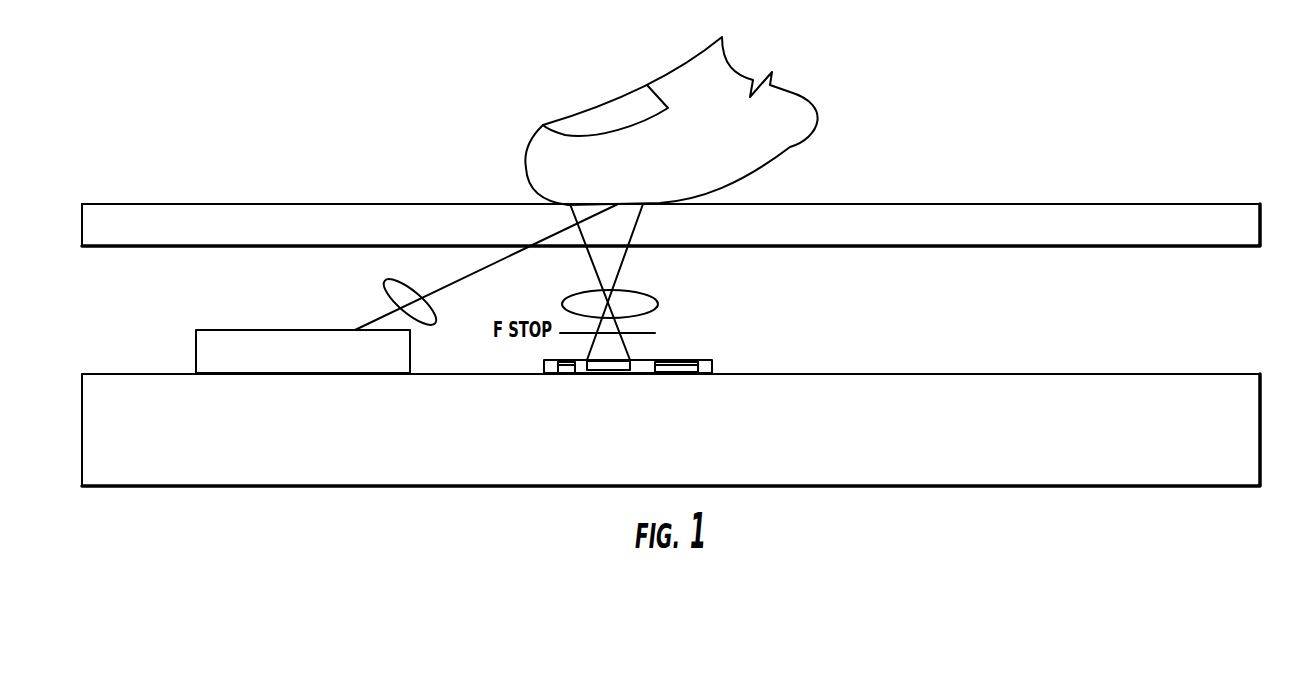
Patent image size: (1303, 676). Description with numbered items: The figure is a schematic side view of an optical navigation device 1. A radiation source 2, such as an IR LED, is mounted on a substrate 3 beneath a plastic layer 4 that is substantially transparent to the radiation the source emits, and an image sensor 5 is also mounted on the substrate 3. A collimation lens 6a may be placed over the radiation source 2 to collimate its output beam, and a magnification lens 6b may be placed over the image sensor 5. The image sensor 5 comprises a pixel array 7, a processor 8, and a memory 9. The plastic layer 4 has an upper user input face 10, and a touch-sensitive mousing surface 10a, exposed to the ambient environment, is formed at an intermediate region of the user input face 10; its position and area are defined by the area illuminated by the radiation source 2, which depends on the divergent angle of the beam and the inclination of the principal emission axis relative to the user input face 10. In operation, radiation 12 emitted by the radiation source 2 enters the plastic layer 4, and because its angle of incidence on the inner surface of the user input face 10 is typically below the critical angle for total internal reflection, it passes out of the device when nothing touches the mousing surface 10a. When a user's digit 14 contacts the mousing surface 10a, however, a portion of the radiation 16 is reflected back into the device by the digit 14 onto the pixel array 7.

The optical navigation device 1 is at (138, 132).
The radiation source 2 is at (240, 330).
The substrate 3 is at (268, 468).
The plastic layer 4 is at (1245, 228).
The image sensor 5 is at (542, 361).
The collimation lens 6a is at (387, 288).
The magnification lens 6b is at (633, 302).
The pixel array 7 is at (630, 362).
The processor 8 is at (676, 373).
The memory 9 is at (566, 373).
The user input face 10 is at (332, 203).
The mousing surface 10a is at (737, 195).
The radiation 12 is at (367, 330).
The digit 14 is at (782, 112).
The reflected radiation 16 is at (590, 262).